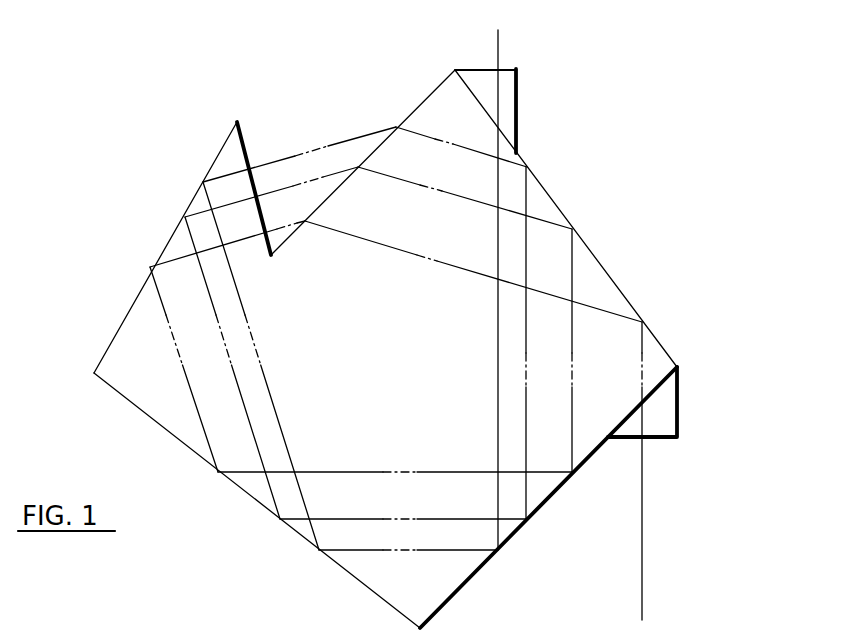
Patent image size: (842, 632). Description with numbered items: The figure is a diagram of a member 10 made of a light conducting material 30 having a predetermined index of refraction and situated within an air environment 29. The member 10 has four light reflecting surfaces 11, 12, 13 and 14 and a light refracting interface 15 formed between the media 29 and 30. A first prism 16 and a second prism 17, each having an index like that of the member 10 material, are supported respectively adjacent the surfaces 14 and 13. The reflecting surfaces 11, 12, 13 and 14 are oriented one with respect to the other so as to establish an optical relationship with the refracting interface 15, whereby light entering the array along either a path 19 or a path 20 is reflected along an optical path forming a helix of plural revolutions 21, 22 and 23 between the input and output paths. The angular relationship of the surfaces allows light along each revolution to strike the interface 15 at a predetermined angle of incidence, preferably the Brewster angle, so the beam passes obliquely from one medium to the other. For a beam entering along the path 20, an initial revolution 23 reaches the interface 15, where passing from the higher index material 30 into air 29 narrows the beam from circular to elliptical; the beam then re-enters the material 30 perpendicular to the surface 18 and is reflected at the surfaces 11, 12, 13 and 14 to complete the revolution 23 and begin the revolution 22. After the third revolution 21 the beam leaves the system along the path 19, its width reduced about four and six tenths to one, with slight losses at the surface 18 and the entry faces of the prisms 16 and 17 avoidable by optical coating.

The member 10 is at (118, 292).
The light reflecting surface 11 is at (113, 337).
The light reflecting surface 12 is at (120, 393).
The light reflecting surface 13 is at (455, 597).
The light reflecting surface 14 is at (608, 270).
The light refracting interface 15 is at (425, 100).
The first prism 16 is at (510, 113).
The second prism 17 is at (673, 412).
The surface 18 is at (241, 141).
The path 19 is at (499, 54).
The path 20 is at (645, 552).
The third revolution 21 is at (468, 152).
The revolution 22 is at (470, 200).
The initial revolution 23 is at (470, 272).
The air environment 29 is at (340, 87).
The light conducting material 30 is at (378, 386).